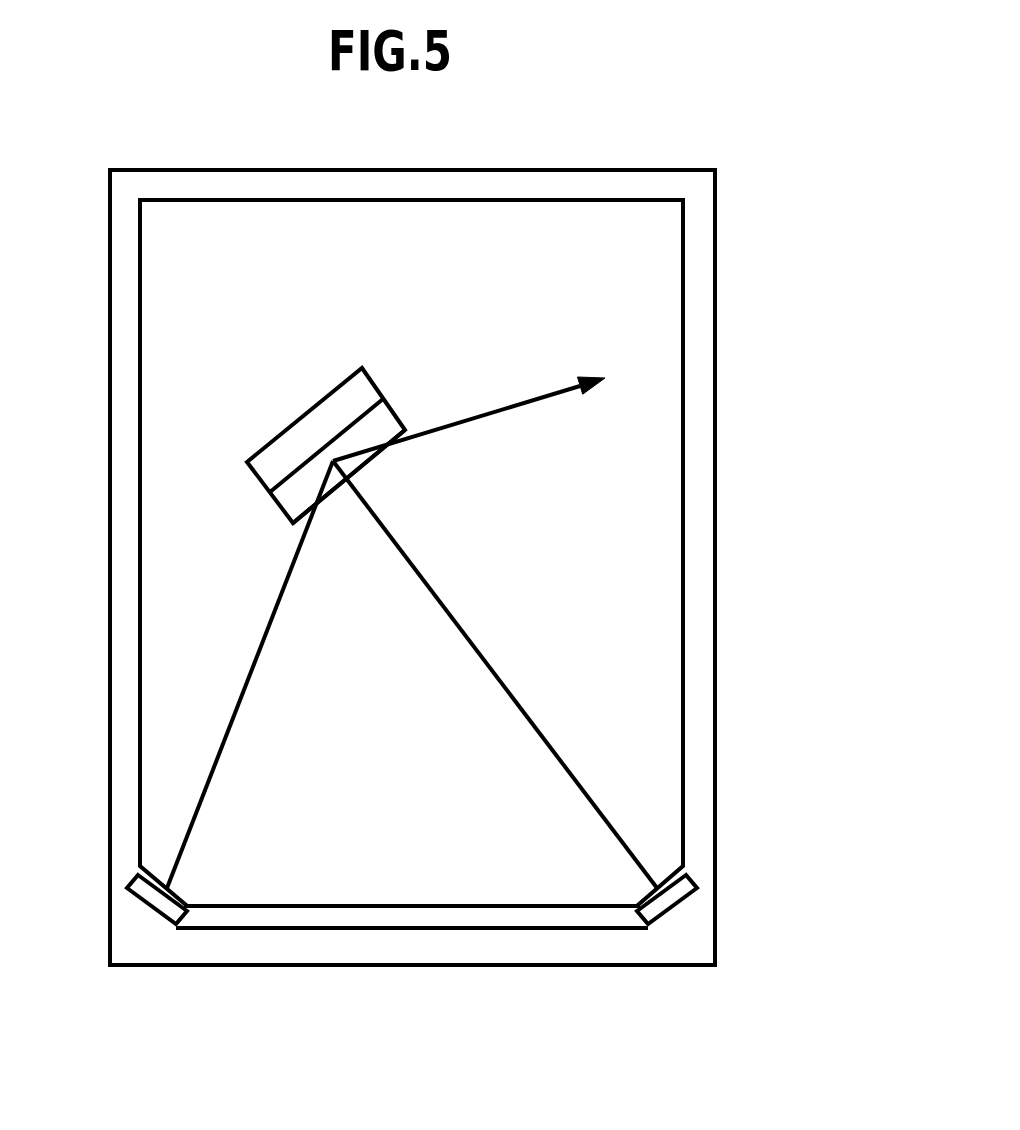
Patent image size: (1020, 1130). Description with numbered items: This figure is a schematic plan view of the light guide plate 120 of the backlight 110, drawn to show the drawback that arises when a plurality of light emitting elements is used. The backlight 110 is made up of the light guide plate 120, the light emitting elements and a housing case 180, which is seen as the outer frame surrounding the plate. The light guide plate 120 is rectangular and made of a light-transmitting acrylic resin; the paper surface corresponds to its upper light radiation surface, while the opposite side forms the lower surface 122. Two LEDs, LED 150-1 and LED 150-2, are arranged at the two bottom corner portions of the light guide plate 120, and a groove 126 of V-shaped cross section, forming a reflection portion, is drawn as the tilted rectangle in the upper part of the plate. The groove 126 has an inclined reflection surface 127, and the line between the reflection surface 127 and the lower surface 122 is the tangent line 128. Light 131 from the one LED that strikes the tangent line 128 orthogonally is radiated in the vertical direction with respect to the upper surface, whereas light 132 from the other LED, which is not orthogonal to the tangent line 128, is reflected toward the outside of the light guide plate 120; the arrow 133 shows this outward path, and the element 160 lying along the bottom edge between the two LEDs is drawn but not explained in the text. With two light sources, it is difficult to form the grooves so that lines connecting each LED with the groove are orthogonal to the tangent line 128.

The backlight 110 is at (415, 982).
The light guide plate 120 is at (685, 382).
The lower surface 122 is at (632, 277).
The groove 126 is at (315, 424).
The reflection surface 127 is at (290, 503).
The tangent line 128 is at (348, 466).
The light 131 is at (492, 660).
The light 132 is at (225, 748).
The emitted light ray 133 is at (433, 433).
The LED 150-1 is at (673, 912).
The LED 150-2 is at (163, 917).
The reflector plate 160 is at (208, 930).
The housing case 180 is at (620, 970).